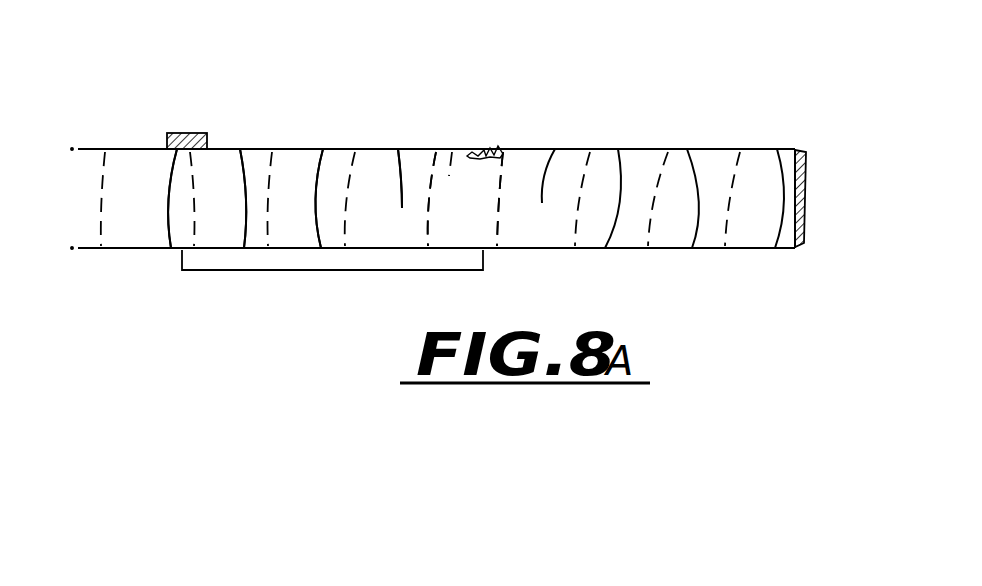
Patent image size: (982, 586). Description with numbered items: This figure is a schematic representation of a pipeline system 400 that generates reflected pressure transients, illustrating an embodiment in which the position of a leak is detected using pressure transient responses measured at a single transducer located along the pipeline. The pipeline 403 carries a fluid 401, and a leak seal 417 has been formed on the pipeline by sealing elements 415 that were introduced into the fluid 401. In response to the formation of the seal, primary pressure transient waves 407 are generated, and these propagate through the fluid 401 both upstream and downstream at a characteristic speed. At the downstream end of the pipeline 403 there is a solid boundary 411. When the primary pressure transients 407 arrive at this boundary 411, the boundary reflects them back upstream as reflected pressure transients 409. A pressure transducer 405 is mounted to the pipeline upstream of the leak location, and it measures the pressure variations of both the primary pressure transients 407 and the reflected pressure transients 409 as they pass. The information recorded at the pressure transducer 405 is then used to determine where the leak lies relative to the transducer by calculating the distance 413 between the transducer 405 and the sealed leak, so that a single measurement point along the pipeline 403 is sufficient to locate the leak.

The tubular member 400 is at (435, 77).
The fluid 401 is at (87, 201).
The pipeline 403 is at (137, 250).
The pressure transducer 405 is at (197, 132).
The primary pressure transient waves 407 is at (239, 169).
The reflected pressure transients 409 is at (347, 178).
The solid boundary 411 is at (800, 196).
The distance 413 is at (302, 270).
The sealing elements 415 is at (470, 152).
The leak seal 417 is at (492, 142).